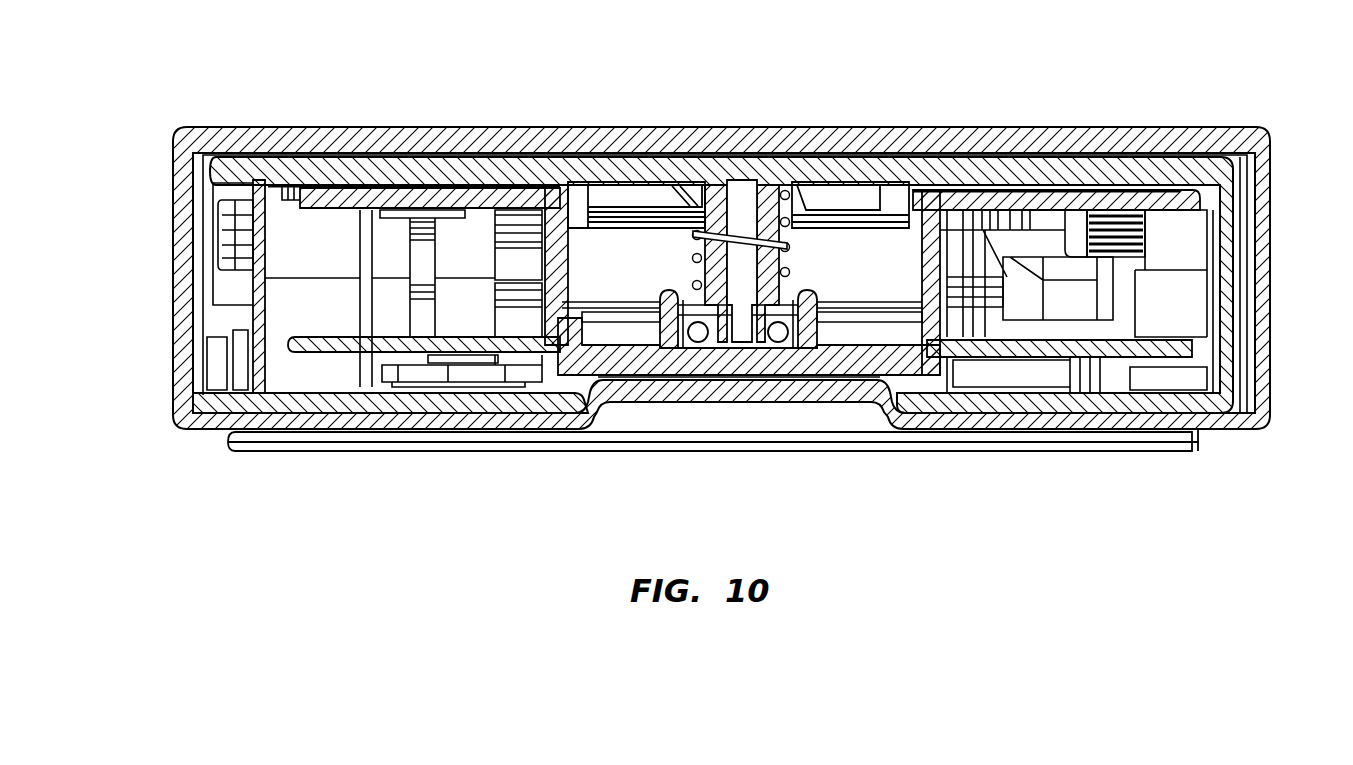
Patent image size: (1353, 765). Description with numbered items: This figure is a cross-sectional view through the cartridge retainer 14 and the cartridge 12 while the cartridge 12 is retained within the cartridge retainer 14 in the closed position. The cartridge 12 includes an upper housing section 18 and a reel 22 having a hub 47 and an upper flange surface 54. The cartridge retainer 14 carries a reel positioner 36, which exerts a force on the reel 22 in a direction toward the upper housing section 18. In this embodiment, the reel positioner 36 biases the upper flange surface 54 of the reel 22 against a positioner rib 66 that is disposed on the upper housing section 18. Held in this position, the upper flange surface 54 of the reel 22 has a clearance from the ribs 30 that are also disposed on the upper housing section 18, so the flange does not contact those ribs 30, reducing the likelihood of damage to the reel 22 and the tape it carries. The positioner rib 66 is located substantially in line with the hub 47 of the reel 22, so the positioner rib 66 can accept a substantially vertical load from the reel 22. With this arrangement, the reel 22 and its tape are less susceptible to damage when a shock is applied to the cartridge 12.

The cartridge 12 is at (1262, 214).
The cartridge retainer 14 is at (1173, 128).
The upper housing section 18 is at (503, 178).
The reel 22 is at (318, 188).
The ribs 30 is at (347, 183).
The reel positioner 36 is at (838, 402).
The hub 47 is at (556, 263).
The upper flange surface 54 is at (420, 186).
The positioner rib 66 is at (566, 189).